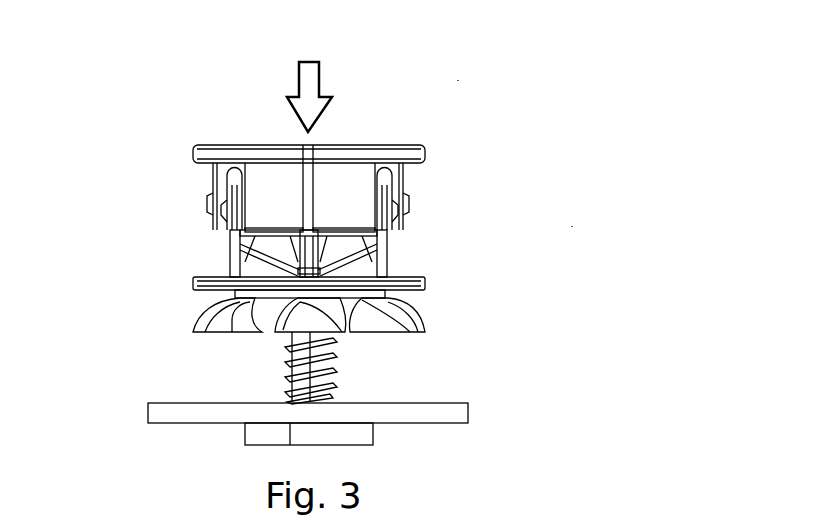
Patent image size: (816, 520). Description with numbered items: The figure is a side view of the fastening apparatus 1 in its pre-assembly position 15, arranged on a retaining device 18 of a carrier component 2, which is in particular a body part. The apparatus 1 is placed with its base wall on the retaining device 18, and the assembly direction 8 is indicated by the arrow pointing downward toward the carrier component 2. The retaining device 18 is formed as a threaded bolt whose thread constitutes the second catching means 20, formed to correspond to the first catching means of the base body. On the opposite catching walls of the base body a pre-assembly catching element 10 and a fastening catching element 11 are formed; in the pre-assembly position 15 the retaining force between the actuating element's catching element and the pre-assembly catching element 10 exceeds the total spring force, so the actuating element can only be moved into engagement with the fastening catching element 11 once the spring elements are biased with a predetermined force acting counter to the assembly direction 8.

The fastening apparatus 1 is at (462, 77).
The carrier component 2 is at (450, 411).
The assembly direction 8 is at (319, 70).
The pre-assembly catching element 10 is at (392, 203).
The fastening catching element 11 is at (403, 238).
The pre-assembly position 15 is at (578, 223).
The retaining device 18 is at (325, 374).
The second catching means 20 is at (290, 383).